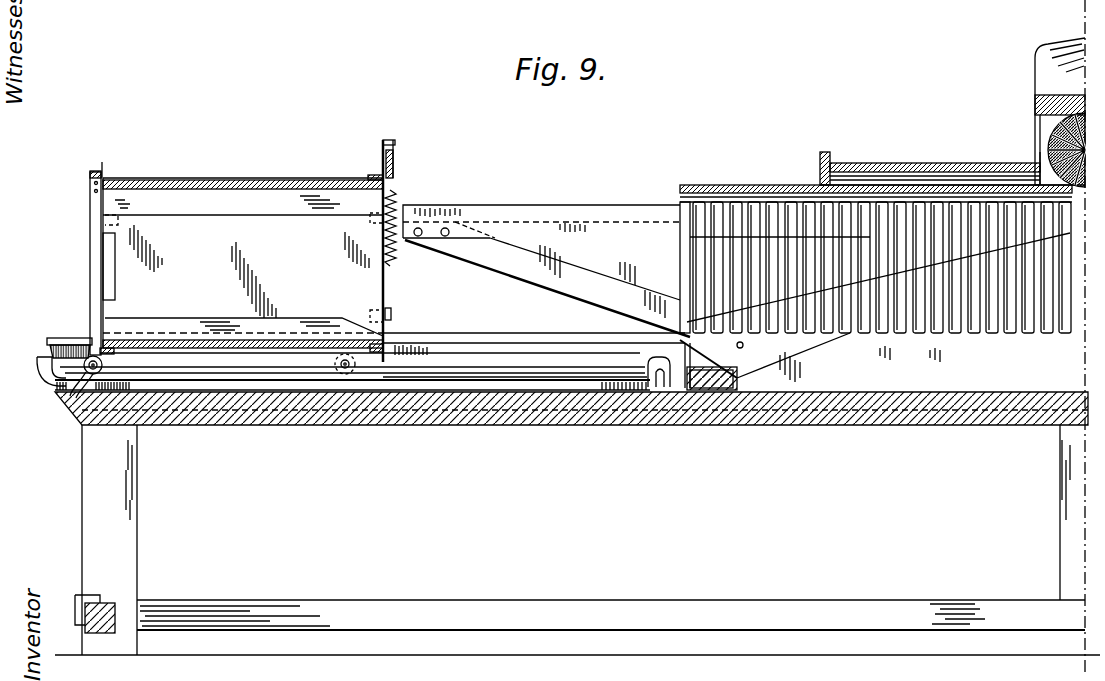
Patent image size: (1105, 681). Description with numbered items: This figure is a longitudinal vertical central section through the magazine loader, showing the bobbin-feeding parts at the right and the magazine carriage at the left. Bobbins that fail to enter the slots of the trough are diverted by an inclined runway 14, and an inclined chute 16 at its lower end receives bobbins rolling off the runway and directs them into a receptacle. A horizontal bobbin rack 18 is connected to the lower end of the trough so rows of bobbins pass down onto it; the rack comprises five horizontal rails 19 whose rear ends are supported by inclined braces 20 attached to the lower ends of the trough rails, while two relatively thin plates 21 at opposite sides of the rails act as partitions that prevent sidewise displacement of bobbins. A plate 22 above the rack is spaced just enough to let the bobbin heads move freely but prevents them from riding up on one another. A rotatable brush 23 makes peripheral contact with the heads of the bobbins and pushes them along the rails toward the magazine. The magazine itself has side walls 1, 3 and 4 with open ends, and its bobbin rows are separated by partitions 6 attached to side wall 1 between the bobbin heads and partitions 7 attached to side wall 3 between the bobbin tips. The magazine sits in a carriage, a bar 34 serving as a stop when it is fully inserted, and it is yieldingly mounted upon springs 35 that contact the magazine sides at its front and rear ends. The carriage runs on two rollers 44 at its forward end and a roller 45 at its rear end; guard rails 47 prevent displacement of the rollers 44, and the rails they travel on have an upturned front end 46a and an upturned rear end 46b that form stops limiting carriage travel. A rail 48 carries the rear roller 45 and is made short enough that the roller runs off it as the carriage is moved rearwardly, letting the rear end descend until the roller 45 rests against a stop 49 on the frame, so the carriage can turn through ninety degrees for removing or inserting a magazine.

The side wall 1 is at (158, 180).
The side wall 3 is at (240, 348).
The side wall 4 is at (236, 257).
The partitions 6 is at (183, 198).
The partitions 7 is at (182, 328).
The inclined runway 14 is at (1055, 95).
The inclined chute 16 is at (895, 163).
The bobbin rack 18 is at (810, 361).
The horizontal rails 19 is at (768, 247).
The inclined braces 20 is at (532, 282).
The thin plates 21 is at (622, 247).
The plate 22 is at (795, 185).
The rotatable brush 23 is at (1042, 148).
The bar 34 is at (98, 200).
The springs 35 is at (112, 178).
The rollers 44 is at (330, 348).
The roller 45 is at (63, 340).
The upturned front end 46a is at (662, 388).
The upturned rear end 46b is at (36, 360).
The guard rails 47 is at (78, 342).
The rail 48 is at (488, 382).
The stop 49 is at (76, 603).